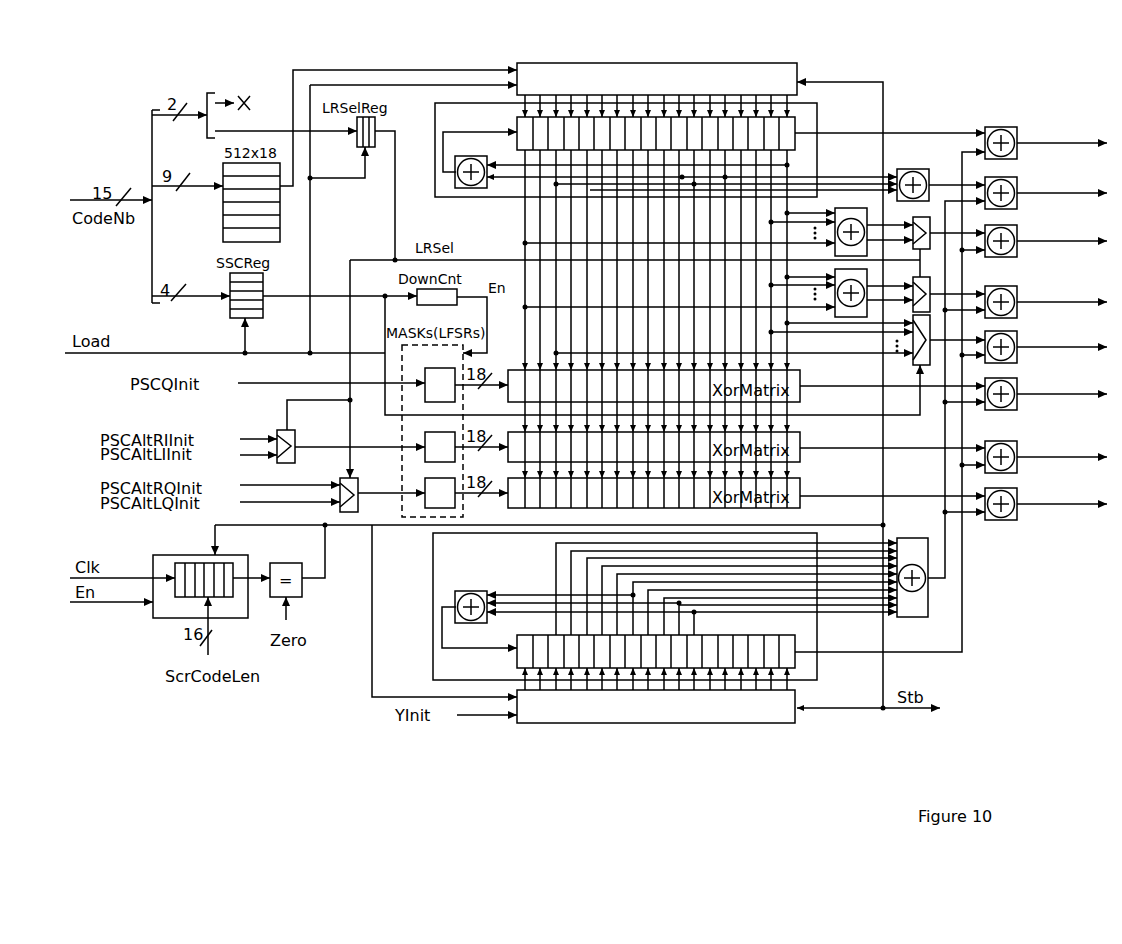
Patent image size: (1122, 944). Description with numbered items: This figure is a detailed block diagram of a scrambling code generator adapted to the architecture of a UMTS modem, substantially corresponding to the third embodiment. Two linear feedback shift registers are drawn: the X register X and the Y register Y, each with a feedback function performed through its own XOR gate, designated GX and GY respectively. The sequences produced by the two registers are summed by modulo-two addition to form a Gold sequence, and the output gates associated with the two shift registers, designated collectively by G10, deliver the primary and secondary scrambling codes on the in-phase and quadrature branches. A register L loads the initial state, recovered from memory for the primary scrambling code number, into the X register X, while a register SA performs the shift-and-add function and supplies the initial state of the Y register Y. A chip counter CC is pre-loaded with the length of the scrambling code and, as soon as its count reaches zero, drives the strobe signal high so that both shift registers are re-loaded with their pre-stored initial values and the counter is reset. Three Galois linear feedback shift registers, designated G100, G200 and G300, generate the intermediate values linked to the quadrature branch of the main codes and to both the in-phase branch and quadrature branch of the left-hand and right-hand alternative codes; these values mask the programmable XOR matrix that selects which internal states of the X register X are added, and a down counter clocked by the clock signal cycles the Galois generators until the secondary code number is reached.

The X register X is at (443, 108).
The register for loading the initial state into the X LFSR L is at (697, 64).
The output gates G10 is at (1013, 122).
The XOR gate GX is at (468, 187).
The XOR gate GY is at (462, 622).
The Galois LFSR G100 is at (395, 392).
The Galois LFSR G200 is at (425, 445).
The Galois LFSR G300 is at (425, 382).
The chip counter CC is at (145, 628).
The register which performs the shift-and-add function SA is at (775, 718).
The Y register Y is at (817, 680).